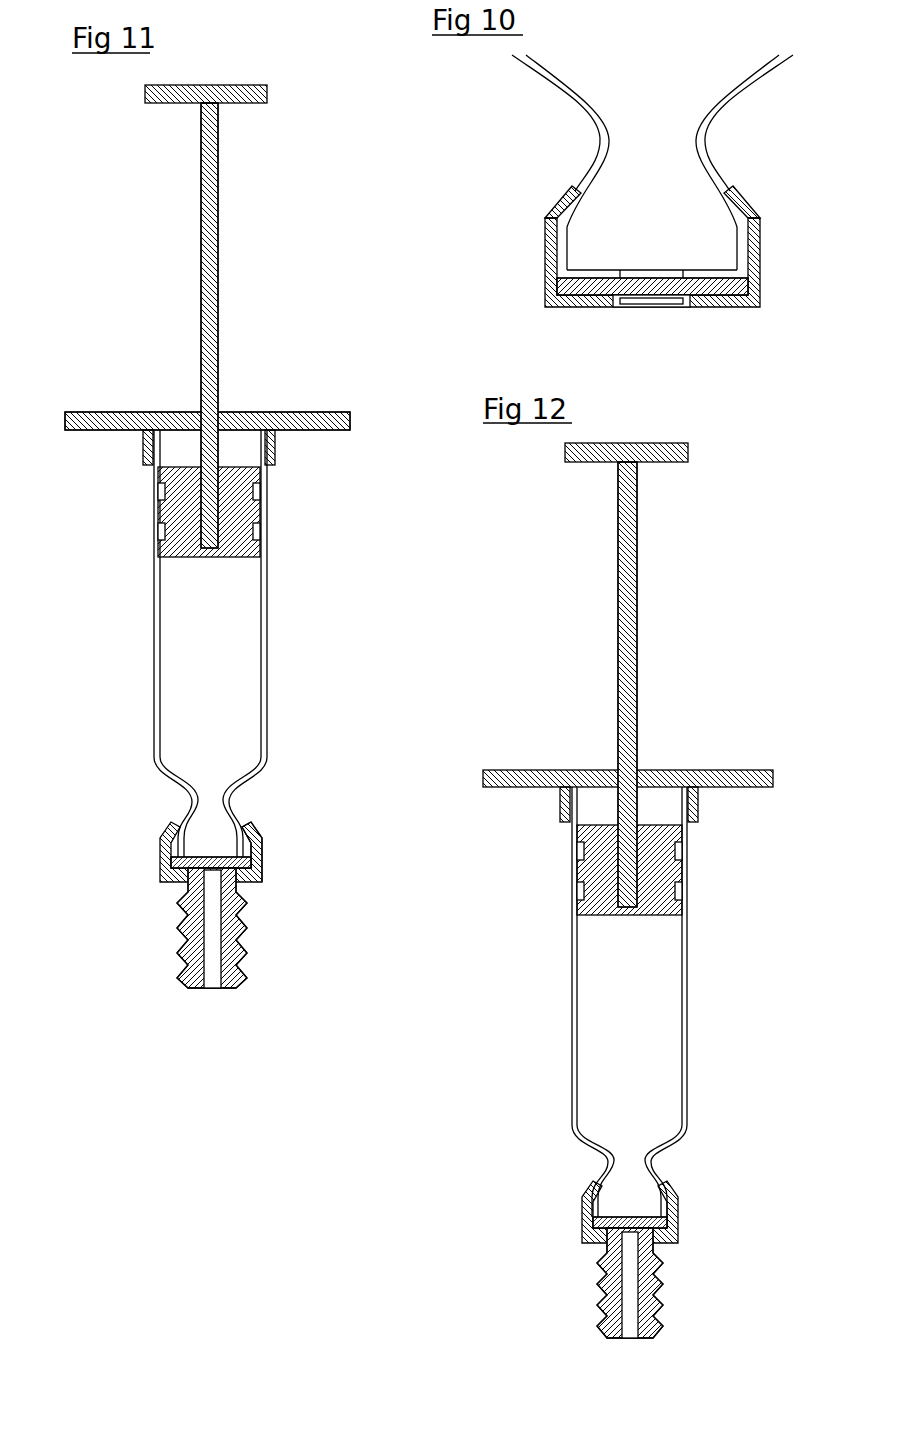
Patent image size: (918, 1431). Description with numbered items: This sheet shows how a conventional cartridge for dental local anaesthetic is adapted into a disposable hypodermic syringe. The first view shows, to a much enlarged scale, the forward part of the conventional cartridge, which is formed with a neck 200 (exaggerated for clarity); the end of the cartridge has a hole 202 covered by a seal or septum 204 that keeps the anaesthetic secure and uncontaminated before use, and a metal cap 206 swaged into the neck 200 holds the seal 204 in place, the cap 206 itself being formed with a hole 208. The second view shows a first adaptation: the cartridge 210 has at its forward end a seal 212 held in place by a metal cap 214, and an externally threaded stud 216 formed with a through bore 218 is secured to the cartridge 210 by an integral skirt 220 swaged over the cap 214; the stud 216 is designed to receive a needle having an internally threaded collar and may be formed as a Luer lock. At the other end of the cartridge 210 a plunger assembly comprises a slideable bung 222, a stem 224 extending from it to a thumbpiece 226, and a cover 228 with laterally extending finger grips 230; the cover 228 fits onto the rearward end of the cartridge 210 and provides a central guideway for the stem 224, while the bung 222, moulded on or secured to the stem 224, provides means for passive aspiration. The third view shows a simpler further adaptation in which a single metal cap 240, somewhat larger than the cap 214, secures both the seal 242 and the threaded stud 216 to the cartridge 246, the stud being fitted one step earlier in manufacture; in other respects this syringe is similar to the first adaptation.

In FIG. 10, the neck 200 is at (570, 130).
In FIG. 10, the hole 202 is at (647, 272).
In FIG. 10, the seal 204 is at (653, 300).
In FIG. 10, the metal cap 206 is at (545, 260).
In FIG. 10, the hole 208 is at (677, 307).
In FIG. 11, the cartridge 210 is at (263, 608).
In FIG. 11, the seal 212 is at (217, 858).
In FIG. 11, the metal cap 214 is at (262, 848).
In FIG. 11, the externally threaded stud 216 is at (247, 937).
In FIG. 12, the externally threaded stud 216 is at (660, 1265).
In FIG. 11, the through bore 218 is at (213, 983).
In FIG. 11, the integral skirt 220 is at (162, 857).
In FIG. 11, the slideable bung 222 is at (265, 517).
In FIG. 11, the stem 224 is at (200, 240).
In FIG. 11, the thumbpiece 226 is at (232, 84).
In FIG. 11, the cover 228 is at (243, 410).
In FIG. 11, the finger grips 230 is at (317, 410).
In FIG. 12, the metal cap 240 is at (587, 1202).
In FIG. 12, the seal 242 is at (632, 1217).
In FIG. 12, the cartridge 246 is at (572, 1080).